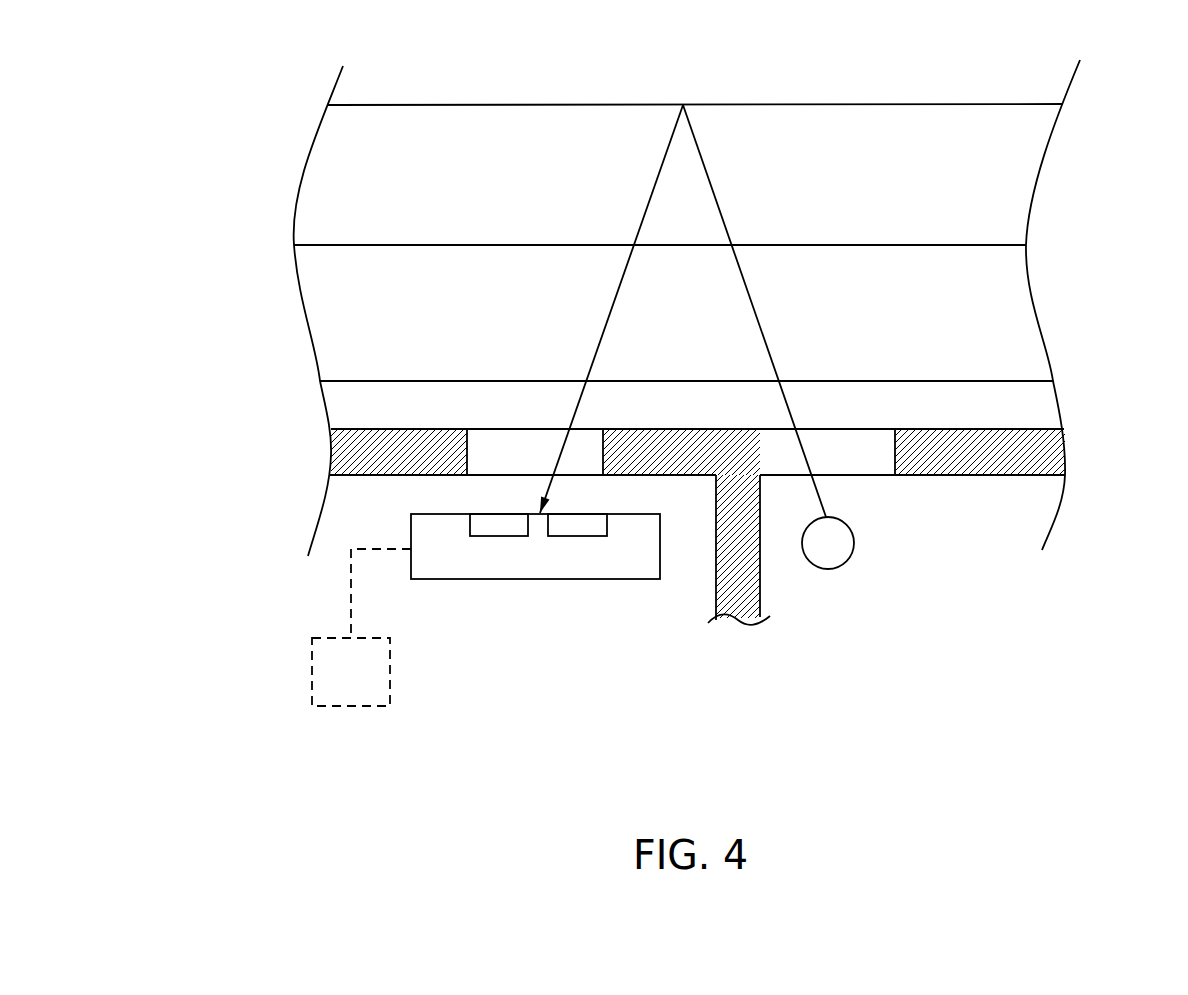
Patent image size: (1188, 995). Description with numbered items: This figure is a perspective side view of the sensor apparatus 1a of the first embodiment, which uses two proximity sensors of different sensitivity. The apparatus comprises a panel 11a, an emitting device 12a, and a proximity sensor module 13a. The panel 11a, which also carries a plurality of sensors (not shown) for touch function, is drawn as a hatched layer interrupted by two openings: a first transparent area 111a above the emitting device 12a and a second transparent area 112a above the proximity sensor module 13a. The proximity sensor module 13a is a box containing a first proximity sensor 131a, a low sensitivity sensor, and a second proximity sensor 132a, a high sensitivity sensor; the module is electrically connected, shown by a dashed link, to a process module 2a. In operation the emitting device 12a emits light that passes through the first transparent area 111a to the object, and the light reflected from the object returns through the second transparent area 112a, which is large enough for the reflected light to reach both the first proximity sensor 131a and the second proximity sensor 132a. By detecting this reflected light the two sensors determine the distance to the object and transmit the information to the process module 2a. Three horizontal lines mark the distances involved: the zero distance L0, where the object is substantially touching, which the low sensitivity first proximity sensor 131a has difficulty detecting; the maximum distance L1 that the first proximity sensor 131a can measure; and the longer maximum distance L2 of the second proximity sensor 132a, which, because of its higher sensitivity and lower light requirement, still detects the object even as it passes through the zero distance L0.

The sensor apparatus 1a is at (960, 545).
The panel 11a is at (955, 429).
The first transparent area 111a is at (845, 429).
The second transparent area 112a is at (536, 429).
The emitting device 12a is at (848, 565).
The proximity sensor module 13a is at (451, 560).
The first proximity sensor 131a is at (578, 538).
The second proximity sensor 132a is at (490, 538).
The process module 2a is at (312, 675).
The zero distance L0 is at (726, 379).
The maximum distance of the first proximity sensor L1 is at (712, 241).
The maximum distance of the second proximity sensor L2 is at (729, 99).